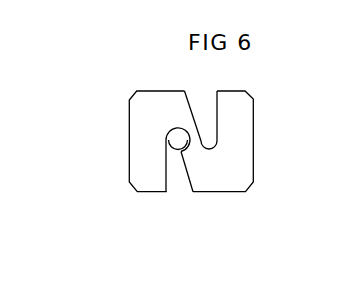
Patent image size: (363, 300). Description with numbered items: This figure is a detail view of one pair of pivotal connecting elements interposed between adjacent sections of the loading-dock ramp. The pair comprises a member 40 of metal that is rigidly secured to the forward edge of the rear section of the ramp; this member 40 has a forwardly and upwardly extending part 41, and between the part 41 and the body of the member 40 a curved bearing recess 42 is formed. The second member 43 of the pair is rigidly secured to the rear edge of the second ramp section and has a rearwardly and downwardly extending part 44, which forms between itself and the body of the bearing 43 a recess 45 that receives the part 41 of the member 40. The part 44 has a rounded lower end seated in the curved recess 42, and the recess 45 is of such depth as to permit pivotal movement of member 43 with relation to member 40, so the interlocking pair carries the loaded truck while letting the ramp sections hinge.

The member 40 is at (237, 148).
The forwardly and upwardly extending part 41 is at (189, 143).
The curved bearing recess 42 is at (206, 152).
The second member 43 is at (152, 137).
The rearwardly and downwardly extending part 44 is at (190, 110).
The recess 45 is at (177, 128).